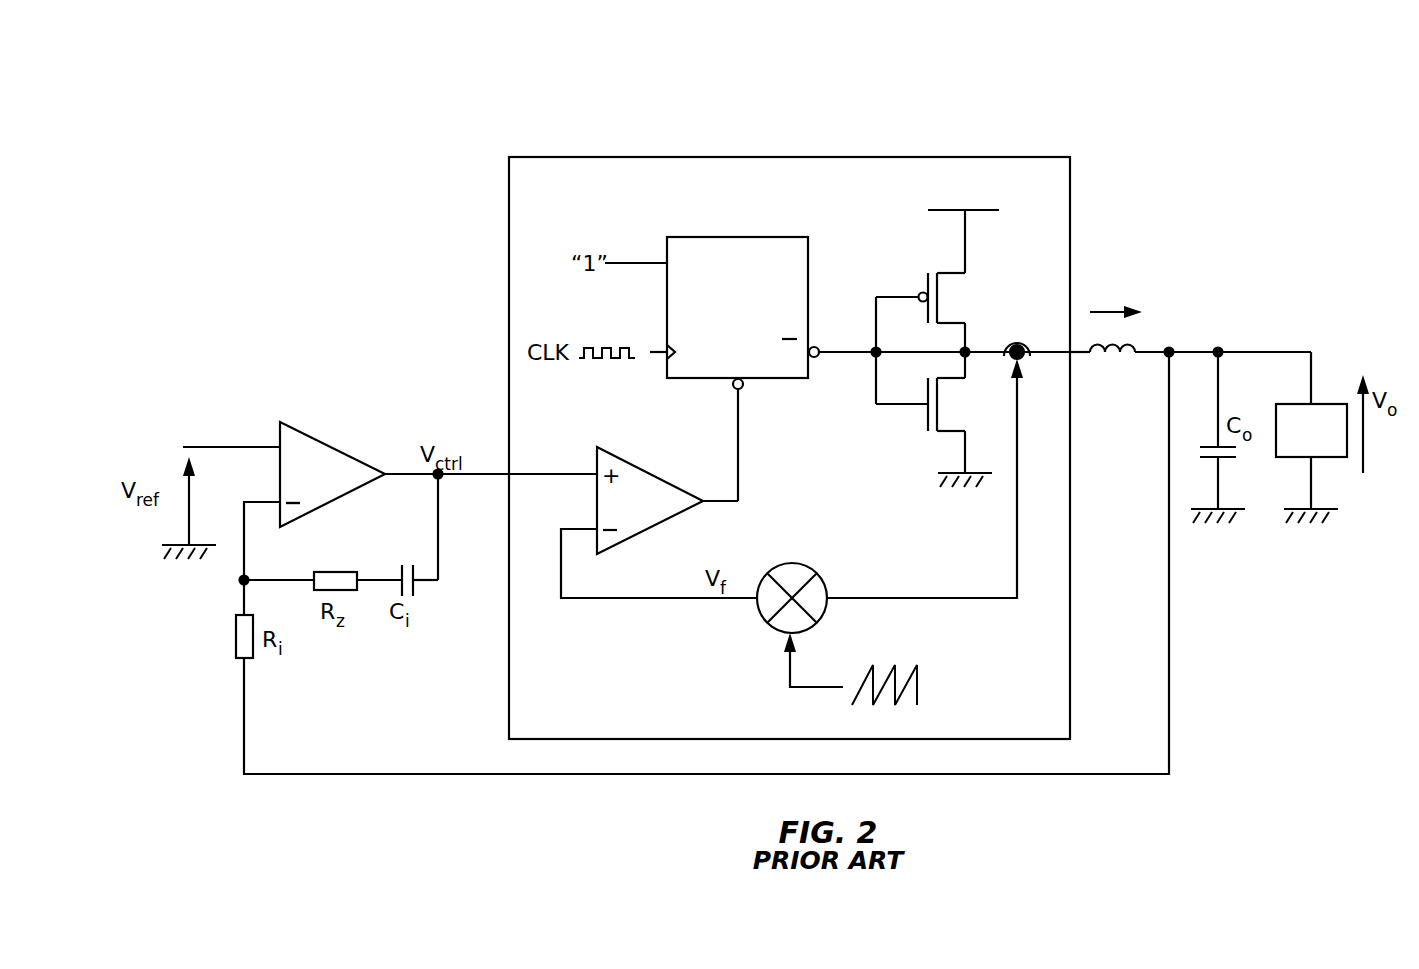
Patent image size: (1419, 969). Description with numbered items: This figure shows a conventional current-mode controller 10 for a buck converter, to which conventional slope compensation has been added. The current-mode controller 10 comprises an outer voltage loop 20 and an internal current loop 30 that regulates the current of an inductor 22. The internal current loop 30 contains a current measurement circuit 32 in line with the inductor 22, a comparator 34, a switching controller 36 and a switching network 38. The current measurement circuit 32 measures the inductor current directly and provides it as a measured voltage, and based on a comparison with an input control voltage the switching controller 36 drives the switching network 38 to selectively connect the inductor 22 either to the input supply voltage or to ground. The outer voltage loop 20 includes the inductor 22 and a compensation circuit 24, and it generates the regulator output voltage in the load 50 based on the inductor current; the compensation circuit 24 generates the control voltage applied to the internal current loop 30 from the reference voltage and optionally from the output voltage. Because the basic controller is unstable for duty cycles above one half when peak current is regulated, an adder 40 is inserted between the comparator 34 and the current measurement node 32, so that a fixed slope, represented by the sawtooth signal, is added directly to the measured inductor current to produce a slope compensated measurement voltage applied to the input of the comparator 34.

The current-mode controller 10 is at (1258, 155).
The outer voltage loop 20 is at (1188, 656).
The inductor 22 is at (1112, 368).
The compensation circuit 24 is at (333, 446).
The internal current loop 30 is at (1003, 157).
The current measurement circuit 32 is at (1024, 342).
The comparator 34 is at (325, 503).
The switching controller 36 is at (770, 237).
The switching network 38 is at (898, 266).
The adder 40 is at (805, 564).
The load 50 is at (1302, 552).